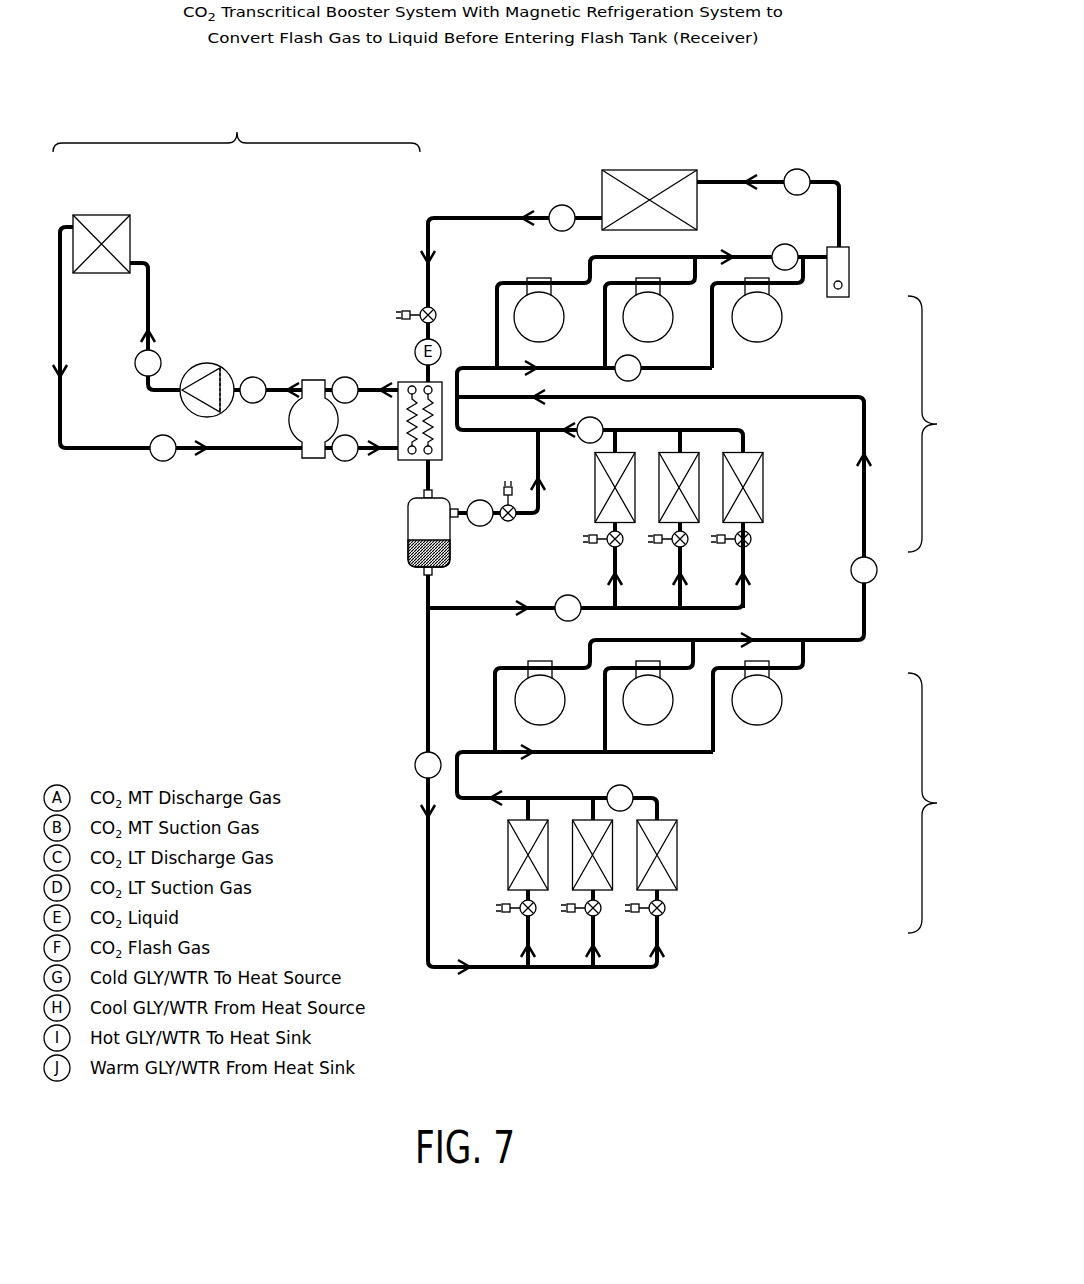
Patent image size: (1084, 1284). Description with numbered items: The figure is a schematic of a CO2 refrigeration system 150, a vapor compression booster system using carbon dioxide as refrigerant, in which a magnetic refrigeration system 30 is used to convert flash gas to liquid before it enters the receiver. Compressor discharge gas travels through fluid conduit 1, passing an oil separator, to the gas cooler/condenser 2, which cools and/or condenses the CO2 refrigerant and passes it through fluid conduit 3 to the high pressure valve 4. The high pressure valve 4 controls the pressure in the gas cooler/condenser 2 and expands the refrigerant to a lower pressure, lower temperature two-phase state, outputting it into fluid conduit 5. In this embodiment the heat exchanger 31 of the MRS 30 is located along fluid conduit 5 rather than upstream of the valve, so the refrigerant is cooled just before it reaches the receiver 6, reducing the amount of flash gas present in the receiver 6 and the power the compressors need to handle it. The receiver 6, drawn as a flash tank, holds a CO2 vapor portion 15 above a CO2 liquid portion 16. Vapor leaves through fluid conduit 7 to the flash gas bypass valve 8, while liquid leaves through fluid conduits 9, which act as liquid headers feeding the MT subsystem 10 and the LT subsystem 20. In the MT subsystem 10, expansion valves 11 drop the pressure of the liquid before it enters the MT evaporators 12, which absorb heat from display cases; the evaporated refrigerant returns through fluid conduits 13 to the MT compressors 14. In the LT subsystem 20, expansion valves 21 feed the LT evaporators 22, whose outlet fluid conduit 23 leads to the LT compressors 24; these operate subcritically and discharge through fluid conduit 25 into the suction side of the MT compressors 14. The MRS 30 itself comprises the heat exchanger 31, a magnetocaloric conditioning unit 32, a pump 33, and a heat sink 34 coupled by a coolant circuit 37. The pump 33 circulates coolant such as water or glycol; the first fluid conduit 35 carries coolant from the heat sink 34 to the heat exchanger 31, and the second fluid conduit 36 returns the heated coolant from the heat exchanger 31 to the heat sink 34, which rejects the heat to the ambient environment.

The fluid conduit 1 is at (845, 202).
The gas cooler/condenser 2 is at (697, 205).
The fluid conduit 3 is at (478, 216).
The high pressure valve 4 is at (437, 316).
The fluid conduit 5 is at (426, 244).
The receiver 6 is at (408, 548).
The fluid conduit 7 is at (470, 502).
The flash gas bypass valve 8 is at (517, 505).
The fluid conduits 9 is at (494, 612).
The medium-temperature (MT) subsystem 10 is at (937, 424).
The expansion valves 11 is at (750, 548).
The MT evaporators 12 is at (760, 452).
The fluid conduits 13 is at (546, 438).
The MT compressors 14 is at (782, 315).
The CO2 vapor portion 15 is at (421, 531).
The CO2 liquid portion 16 is at (421, 564).
The low-temperature (LT) subsystem 20 is at (937, 803).
The expansion valves 21 is at (664, 917).
The LT evaporators 22 is at (678, 820).
The fluid conduit 23 is at (462, 804).
The LT compressors 24 is at (782, 708).
The fluid conduit 25 is at (868, 614).
The magnetic refrigeration system (MRS) 30 is at (236, 153).
The heat exchanger 31 is at (398, 413).
The magnetocaloric conditioning unit 32 is at (290, 425).
The pump 33 is at (200, 365).
The heat sink 34 is at (94, 275).
The first fluid conduit 35 is at (228, 453).
The second fluid conduit 36 is at (323, 381).
The coolant circuit 37 is at (137, 467).
The CO2 refrigeration system 150 is at (806, 91).